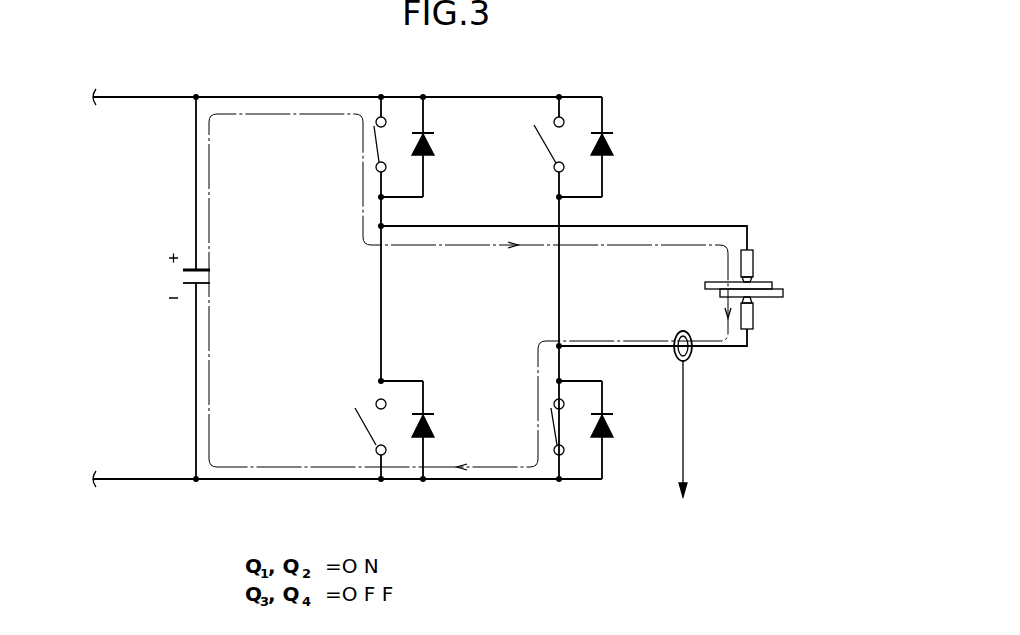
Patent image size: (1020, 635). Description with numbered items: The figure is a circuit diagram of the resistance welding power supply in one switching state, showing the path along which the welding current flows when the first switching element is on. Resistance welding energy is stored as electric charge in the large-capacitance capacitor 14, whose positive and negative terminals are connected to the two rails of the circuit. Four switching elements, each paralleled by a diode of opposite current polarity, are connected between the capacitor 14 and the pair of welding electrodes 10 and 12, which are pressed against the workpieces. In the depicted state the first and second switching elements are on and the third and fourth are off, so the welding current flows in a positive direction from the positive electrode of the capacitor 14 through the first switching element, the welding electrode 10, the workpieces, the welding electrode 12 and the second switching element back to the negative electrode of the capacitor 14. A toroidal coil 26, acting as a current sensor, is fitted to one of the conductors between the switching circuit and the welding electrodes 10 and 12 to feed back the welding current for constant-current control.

The welding electrode 10 is at (757, 268).
The welding electrode 12 is at (755, 320).
The capacitor 14 is at (177, 272).
The toroidal coil (current sensor) 26 is at (691, 360).